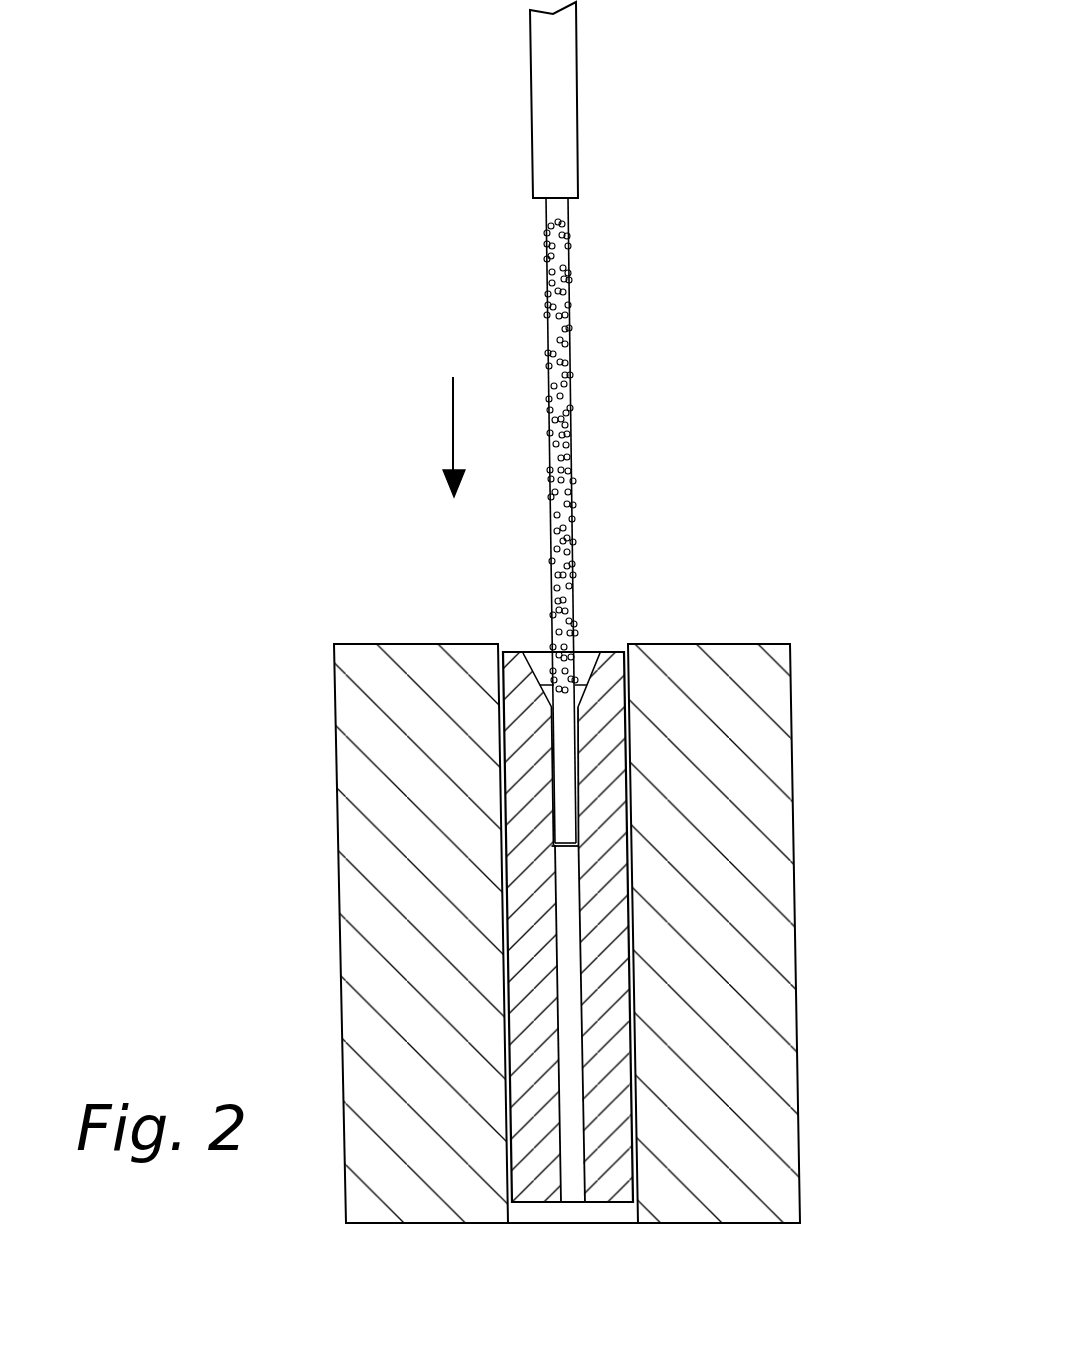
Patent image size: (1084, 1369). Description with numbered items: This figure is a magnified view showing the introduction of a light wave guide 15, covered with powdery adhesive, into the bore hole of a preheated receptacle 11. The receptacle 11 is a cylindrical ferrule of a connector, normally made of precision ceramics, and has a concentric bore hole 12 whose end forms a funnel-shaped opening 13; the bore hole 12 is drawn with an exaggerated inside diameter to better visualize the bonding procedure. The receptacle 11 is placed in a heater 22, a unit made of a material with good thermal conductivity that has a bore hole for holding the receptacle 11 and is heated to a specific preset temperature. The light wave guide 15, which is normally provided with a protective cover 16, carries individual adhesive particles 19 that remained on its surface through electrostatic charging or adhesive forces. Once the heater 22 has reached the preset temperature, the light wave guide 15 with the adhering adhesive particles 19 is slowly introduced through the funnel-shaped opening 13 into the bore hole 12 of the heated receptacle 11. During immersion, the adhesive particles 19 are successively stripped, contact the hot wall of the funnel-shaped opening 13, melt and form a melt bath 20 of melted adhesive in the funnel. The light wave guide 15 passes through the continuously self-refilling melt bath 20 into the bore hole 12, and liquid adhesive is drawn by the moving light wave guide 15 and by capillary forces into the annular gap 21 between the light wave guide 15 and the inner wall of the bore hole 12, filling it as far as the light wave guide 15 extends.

The receptacle 11 is at (533, 888).
The bore hole 12 is at (567, 1003).
The funnel-shaped opening 13 is at (592, 670).
The light wave guide 15 is at (550, 212).
The protective cover 16 is at (567, 125).
The adhesive particles 19 is at (575, 332).
The melt bath 20 is at (547, 680).
The annular gap 21 is at (580, 768).
The heater 22 is at (778, 1138).